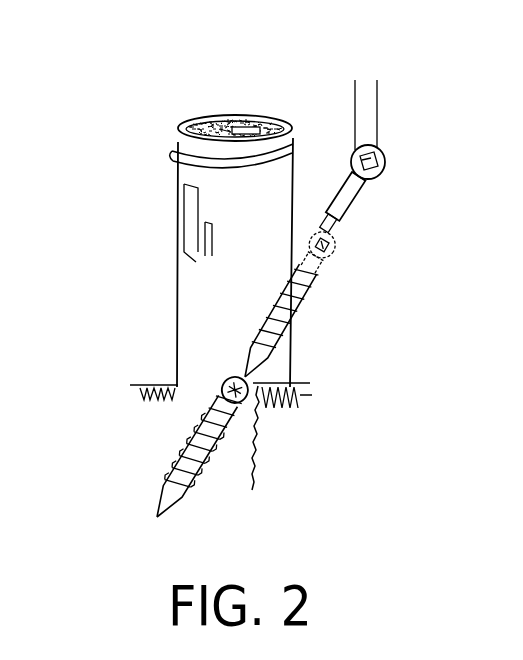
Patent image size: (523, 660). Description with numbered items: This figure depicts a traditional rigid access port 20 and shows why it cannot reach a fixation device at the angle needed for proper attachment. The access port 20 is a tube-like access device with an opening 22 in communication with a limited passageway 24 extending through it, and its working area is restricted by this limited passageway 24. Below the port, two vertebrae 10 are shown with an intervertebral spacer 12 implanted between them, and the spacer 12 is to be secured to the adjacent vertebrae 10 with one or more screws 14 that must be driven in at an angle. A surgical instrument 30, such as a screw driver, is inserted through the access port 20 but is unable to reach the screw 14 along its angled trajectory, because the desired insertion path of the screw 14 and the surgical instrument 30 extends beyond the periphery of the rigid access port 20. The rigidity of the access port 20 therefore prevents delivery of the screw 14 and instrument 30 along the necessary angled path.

The vertebrae 10 is at (150, 460).
The intervertebral spacer 12 is at (239, 488).
The screw 14 is at (270, 330).
The access port 20 is at (260, 250).
The opening 22 is at (210, 118).
The passageway 24 is at (257, 123).
The surgical instrument 30 is at (370, 135).